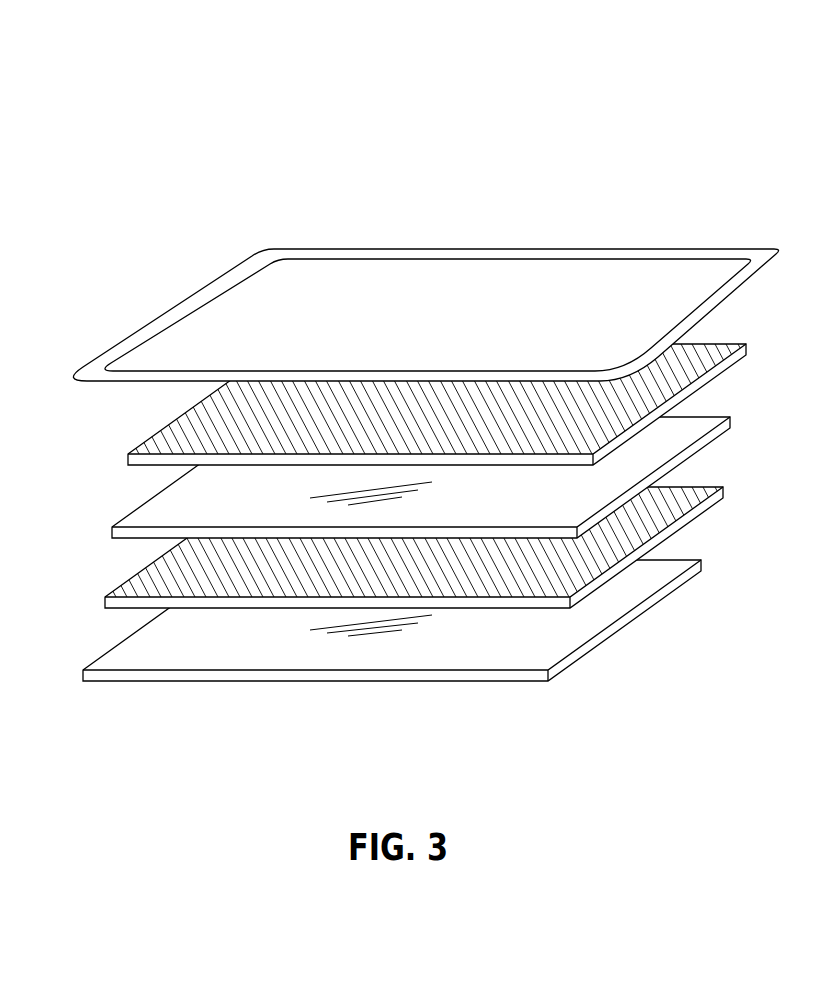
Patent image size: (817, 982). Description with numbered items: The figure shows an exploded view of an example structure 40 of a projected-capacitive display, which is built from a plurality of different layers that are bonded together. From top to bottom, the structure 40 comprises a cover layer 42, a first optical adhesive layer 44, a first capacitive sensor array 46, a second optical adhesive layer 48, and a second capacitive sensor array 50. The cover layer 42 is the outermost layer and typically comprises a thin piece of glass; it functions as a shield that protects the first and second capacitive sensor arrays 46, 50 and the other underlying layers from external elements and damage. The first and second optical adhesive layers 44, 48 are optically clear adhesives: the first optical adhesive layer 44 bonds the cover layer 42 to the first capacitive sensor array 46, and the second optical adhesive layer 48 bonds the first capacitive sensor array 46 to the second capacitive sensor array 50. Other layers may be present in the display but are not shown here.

The structure 40 is at (678, 130).
The cover layer 42 is at (720, 248).
The first optical adhesive layer 44 is at (690, 342).
The first capacitive sensor array 46 is at (687, 415).
The second optical adhesive layer 48 is at (695, 485).
The second capacitive sensor array 50 is at (690, 558).